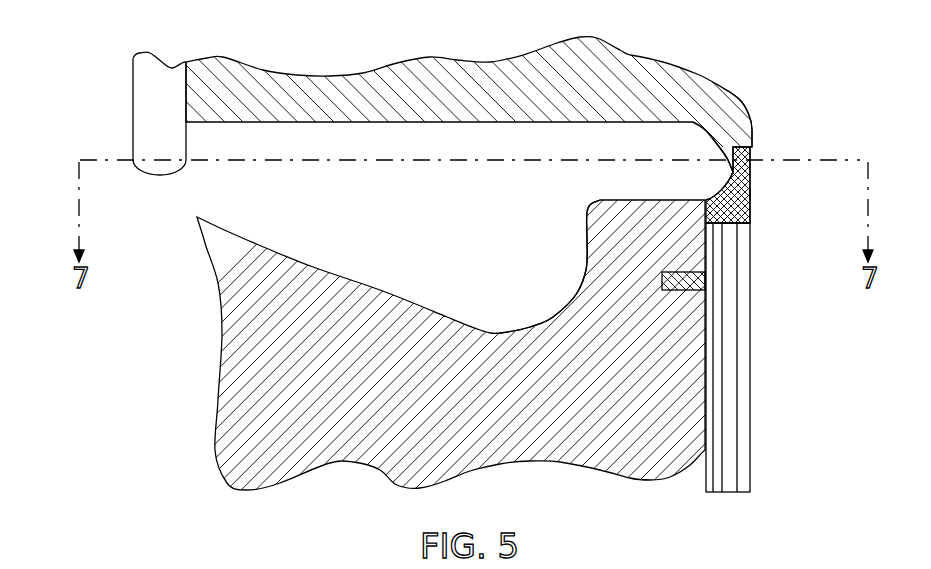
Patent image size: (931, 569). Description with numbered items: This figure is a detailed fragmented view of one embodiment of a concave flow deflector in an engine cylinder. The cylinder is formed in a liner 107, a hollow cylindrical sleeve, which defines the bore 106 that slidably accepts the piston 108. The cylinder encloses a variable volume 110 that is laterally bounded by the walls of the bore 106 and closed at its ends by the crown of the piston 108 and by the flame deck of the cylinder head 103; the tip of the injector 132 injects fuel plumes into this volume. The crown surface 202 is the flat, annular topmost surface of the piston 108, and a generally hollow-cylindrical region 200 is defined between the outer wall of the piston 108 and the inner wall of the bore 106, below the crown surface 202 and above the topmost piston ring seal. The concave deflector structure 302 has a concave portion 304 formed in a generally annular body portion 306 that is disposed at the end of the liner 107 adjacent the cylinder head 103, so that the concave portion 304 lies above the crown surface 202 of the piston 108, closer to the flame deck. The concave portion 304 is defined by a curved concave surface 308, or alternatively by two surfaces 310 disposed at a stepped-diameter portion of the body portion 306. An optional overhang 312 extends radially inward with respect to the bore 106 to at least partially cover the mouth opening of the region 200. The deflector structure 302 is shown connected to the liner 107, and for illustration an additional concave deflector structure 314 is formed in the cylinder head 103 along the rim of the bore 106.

The cylinder head 103 is at (628, 65).
The injector 132 is at (150, 105).
The variable volume 110 is at (420, 212).
The piston 108 is at (622, 464).
The crown surface 202 is at (597, 195).
The region 200 is at (718, 249).
The liner 107 is at (738, 326).
The bore 106 is at (705, 430).
The concave deflector structure 302 is at (720, 172).
The concave portion 304 is at (692, 184).
The body portion 306 is at (750, 197).
The concave surface 308 is at (748, 111).
The two surfaces 310 is at (757, 178).
The overhang 312 is at (750, 218).
The concave deflector structure 314 is at (688, 135).